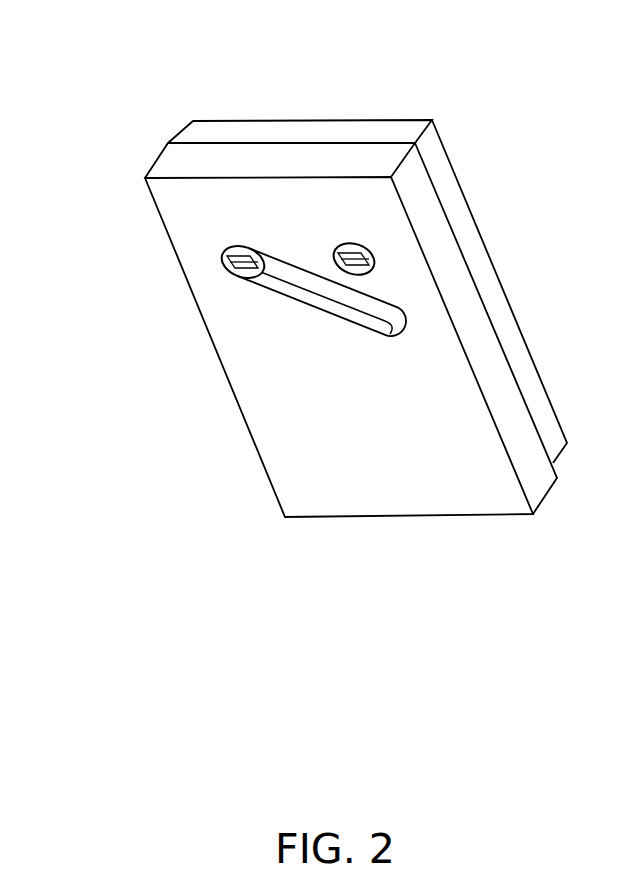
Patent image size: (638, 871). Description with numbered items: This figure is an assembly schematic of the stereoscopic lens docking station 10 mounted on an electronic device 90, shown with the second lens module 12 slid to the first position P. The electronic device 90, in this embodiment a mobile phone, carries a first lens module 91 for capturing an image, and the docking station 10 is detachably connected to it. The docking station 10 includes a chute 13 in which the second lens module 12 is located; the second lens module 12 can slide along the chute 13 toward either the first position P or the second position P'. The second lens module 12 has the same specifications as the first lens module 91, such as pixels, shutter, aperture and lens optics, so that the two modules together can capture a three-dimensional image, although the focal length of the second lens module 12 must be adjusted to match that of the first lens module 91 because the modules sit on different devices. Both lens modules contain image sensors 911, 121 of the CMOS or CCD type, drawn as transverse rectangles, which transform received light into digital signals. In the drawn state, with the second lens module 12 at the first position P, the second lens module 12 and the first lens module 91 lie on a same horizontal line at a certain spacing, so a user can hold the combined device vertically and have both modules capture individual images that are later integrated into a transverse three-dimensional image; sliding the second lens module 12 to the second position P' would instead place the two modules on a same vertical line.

The stereoscopic lens docking station 10 is at (257, 543).
The electronic device 90 is at (382, 120).
The second lens module 12 is at (235, 247).
The image sensor 121 is at (238, 263).
The chute 13 is at (352, 310).
The first lens module 91 is at (363, 248).
The image sensor 911 is at (372, 265).
The first position P is at (130, 278).
The second position P' is at (504, 329).